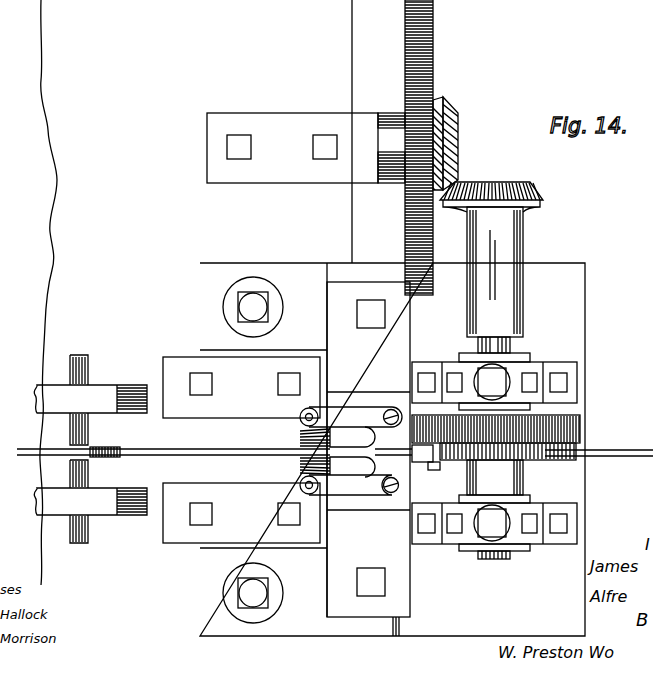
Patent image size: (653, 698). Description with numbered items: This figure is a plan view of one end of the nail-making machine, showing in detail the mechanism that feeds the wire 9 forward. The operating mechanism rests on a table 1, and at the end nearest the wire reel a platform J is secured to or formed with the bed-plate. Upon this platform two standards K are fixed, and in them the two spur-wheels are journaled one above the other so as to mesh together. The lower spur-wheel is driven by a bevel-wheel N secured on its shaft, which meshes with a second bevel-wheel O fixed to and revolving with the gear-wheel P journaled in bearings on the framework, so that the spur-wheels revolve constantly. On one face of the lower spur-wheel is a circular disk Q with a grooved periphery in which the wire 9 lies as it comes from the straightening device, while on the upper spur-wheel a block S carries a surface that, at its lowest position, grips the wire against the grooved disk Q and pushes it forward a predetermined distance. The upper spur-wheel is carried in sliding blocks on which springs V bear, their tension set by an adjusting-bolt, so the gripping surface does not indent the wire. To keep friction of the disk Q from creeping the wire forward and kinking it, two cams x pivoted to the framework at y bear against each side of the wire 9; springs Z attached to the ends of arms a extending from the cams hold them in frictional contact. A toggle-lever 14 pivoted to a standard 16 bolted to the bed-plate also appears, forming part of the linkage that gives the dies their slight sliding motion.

The table 1 is at (392, 318).
The toggle-lever 14 is at (52, 397).
The standard 16 is at (241, 450).
The wire 9 is at (16, 452).
The springs Z is at (300, 440).
The arms a is at (338, 412).
The cams x is at (378, 450).
The pivots y is at (391, 409).
The block S is at (438, 455).
The circular disk Q is at (556, 459).
The springs V is at (500, 405).
The standards K is at (577, 368).
The platform J is at (475, 600).
The gear-wheel P is at (436, 72).
The bevel-wheel O is at (460, 150).
The bevel-wheel N is at (545, 192).